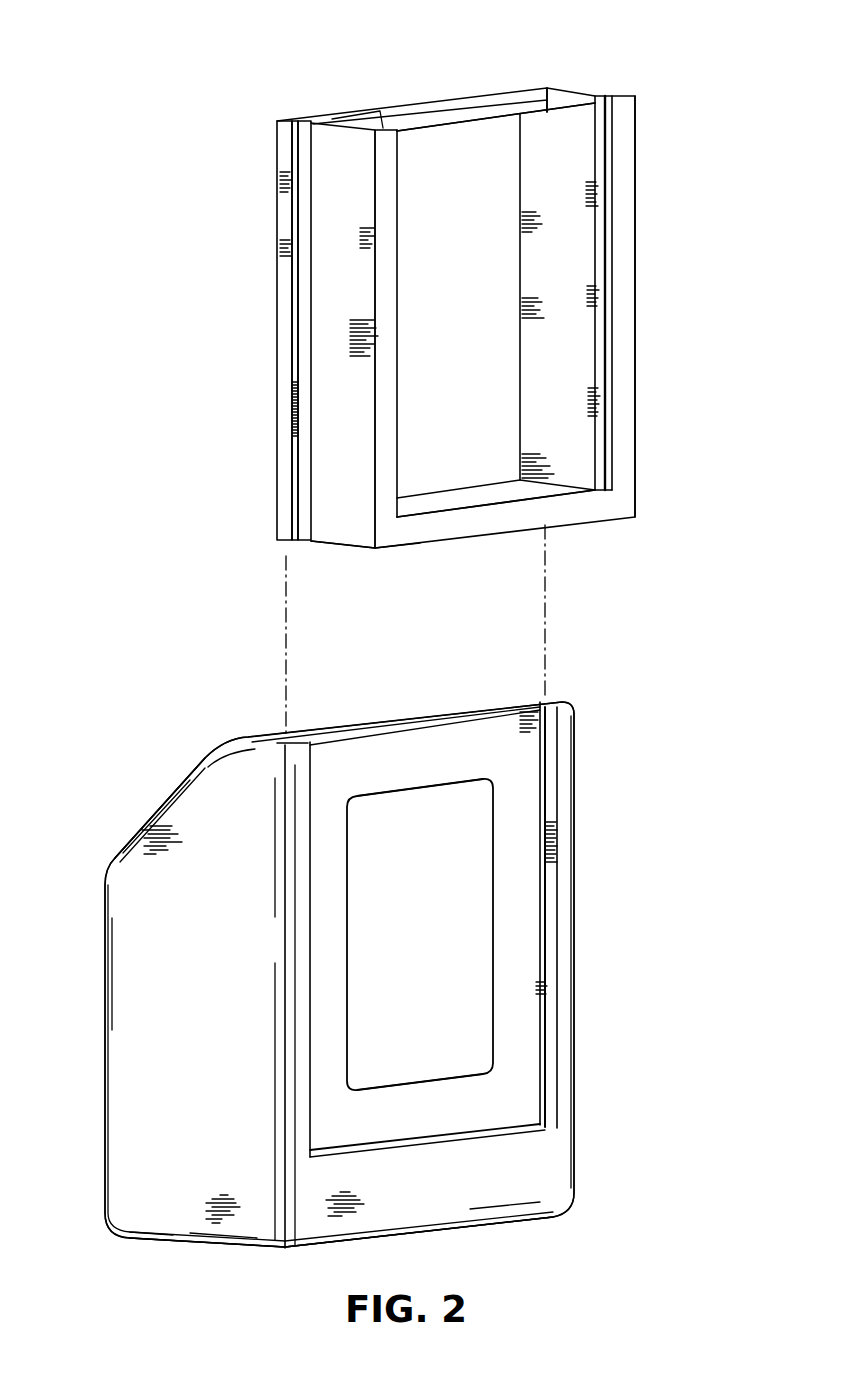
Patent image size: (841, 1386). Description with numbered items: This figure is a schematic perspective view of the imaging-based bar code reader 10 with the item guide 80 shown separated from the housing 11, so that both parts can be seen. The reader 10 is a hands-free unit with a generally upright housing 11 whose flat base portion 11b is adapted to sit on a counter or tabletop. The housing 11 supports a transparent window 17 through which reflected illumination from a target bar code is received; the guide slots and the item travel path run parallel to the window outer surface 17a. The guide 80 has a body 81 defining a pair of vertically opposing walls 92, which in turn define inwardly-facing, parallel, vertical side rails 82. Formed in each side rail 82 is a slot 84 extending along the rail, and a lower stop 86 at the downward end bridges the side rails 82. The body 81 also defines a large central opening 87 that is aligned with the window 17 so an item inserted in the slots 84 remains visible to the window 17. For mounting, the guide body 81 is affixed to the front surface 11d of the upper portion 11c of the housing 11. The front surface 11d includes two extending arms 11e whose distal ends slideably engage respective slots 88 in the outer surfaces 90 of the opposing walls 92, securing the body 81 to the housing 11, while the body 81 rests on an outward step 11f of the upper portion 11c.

The item guide 80 is at (475, 64).
The body 81 is at (367, 564).
The side rail 82 is at (400, 160).
The slot 84 is at (383, 126).
The lower stop 86 is at (520, 500).
The central opening 87 is at (450, 332).
The slot 88 is at (548, 97).
The outer surface 90 is at (613, 97).
The opposing wall 92 is at (625, 372).
The imaging-based bar code reader 10 is at (144, 748).
The housing 11 is at (91, 1051).
The flat base portion 11b is at (165, 1242).
The upper portion 11c is at (152, 905).
The front surface 11d is at (392, 763).
The extending arm 11e is at (305, 748).
The outward step 11f is at (440, 1138).
The transparent window 17 is at (460, 843).
The outer surface 17a is at (447, 945).